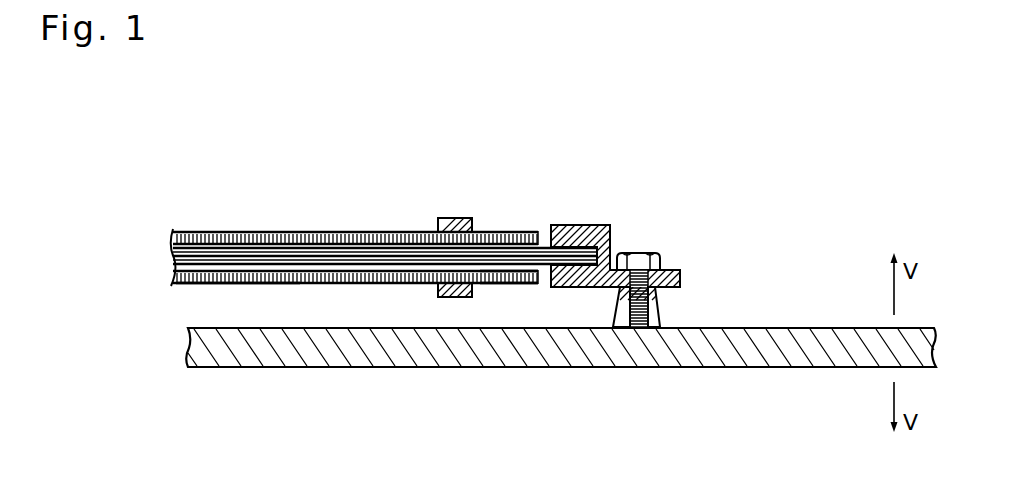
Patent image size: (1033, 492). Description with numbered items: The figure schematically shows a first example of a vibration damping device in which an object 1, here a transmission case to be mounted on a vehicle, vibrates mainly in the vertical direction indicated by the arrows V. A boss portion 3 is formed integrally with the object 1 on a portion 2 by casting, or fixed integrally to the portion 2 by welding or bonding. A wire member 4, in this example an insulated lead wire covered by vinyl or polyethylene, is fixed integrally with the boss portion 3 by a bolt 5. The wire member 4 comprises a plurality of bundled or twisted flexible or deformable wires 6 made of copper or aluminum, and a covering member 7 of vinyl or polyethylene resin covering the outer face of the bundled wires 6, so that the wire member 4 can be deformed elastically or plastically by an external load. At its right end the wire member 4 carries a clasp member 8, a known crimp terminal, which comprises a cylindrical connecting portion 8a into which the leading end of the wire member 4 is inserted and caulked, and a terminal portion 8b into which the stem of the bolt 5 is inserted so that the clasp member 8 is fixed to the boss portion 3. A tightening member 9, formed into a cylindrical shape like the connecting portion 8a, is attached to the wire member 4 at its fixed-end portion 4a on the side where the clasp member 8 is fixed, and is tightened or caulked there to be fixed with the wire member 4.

The object 1 is at (387, 348).
The portion 2 is at (592, 377).
The boss portion 3 is at (660, 318).
The wire member 4 is at (275, 224).
The end portion 4a is at (503, 286).
The bolt 5 is at (648, 252).
The wires 6 is at (180, 258).
The covering member 7 is at (186, 287).
The clasp member 8 is at (612, 214).
The cylindrical connecting portion 8a is at (565, 225).
The terminal portion 8b is at (678, 273).
The tightening member 9 is at (452, 218).